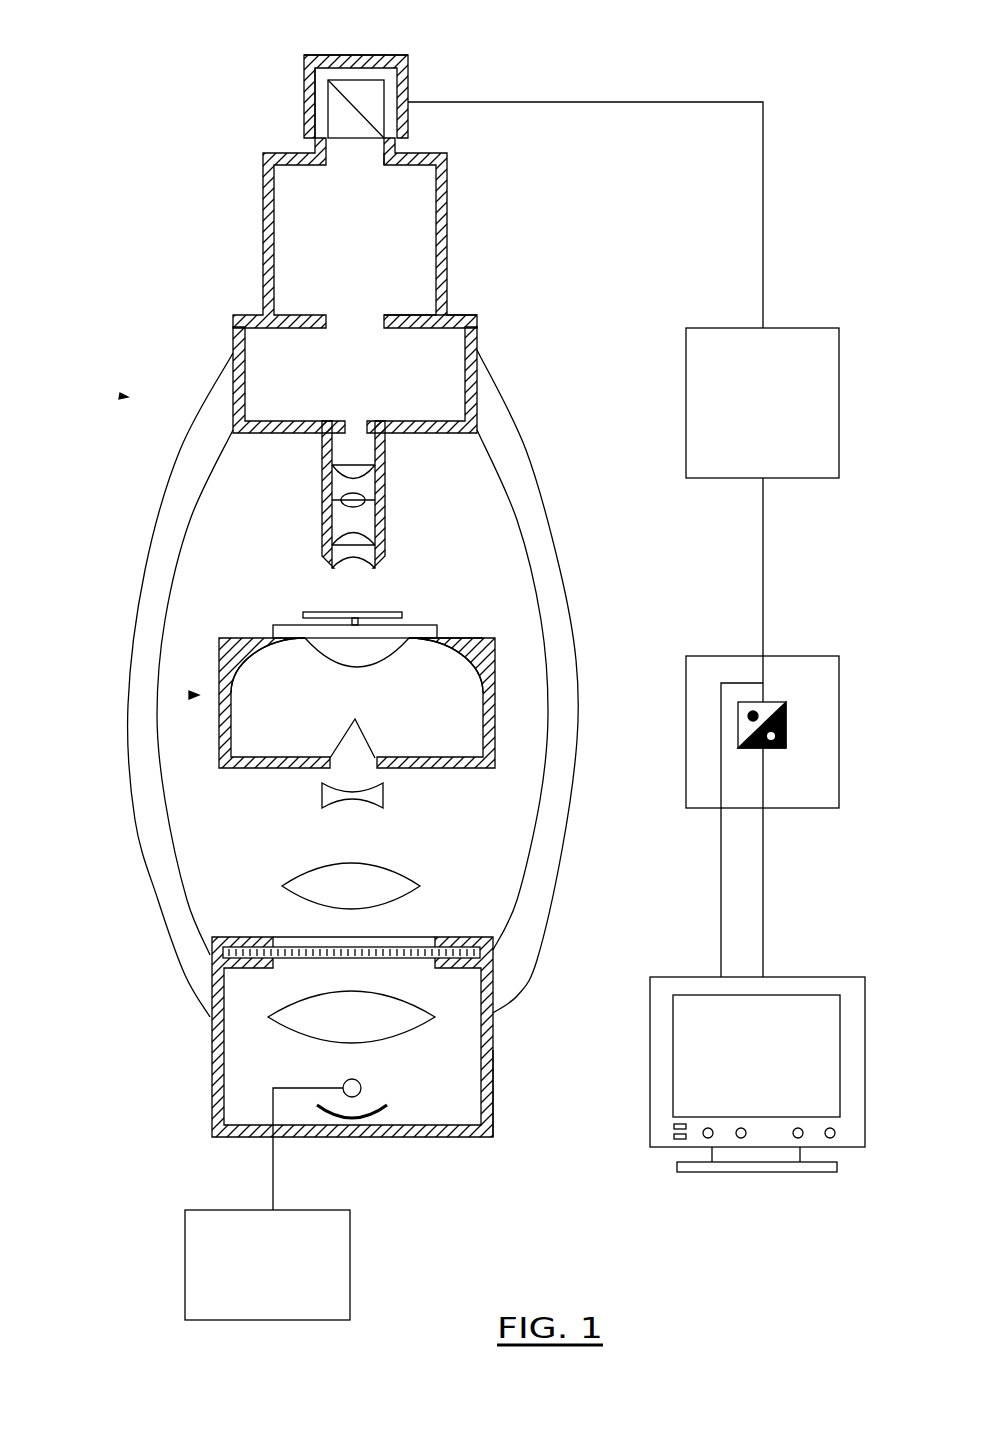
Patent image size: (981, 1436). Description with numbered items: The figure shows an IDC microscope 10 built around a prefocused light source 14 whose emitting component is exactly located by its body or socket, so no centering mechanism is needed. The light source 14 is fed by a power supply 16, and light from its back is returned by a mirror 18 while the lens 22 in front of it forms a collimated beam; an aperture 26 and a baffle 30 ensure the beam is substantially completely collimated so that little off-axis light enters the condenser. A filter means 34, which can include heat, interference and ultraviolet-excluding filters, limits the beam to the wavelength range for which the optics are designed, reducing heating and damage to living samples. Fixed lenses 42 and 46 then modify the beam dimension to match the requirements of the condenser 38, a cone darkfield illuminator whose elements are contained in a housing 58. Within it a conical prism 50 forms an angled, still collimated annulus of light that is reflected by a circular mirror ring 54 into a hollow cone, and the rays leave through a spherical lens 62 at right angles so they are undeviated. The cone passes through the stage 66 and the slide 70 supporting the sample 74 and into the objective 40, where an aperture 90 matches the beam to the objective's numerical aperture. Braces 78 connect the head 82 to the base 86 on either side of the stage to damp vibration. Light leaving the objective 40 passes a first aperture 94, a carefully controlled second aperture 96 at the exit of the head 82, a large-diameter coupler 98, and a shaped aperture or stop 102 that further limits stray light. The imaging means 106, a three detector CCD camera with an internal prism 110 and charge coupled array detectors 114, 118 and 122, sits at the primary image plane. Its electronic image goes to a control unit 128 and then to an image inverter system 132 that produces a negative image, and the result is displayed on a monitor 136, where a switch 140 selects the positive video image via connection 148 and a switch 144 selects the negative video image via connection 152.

The microscope 10 is at (120, 393).
The light source 14 is at (363, 1087).
The power supply 16 is at (350, 1262).
The mirror 18 is at (327, 1113).
The lens 22 is at (430, 1017).
The aperture 26 is at (228, 965).
The baffle 30 is at (240, 960).
The filter means 34 is at (407, 947).
The condenser 38 is at (190, 695).
The objective 40 is at (385, 510).
The fixed lens 42 is at (403, 883).
The fixed lens 46 is at (380, 793).
The conical prism 50 is at (347, 738).
The circular mirror ring 54 is at (253, 652).
The housing 58 is at (487, 760).
The spherical lens 62 is at (383, 648).
The stage 66 is at (463, 640).
The slide 70 is at (288, 623).
The sample 74 is at (365, 613).
The braces 78 is at (153, 568).
The head 82 is at (233, 343).
The base 86 is at (493, 1105).
The aperture 90 is at (337, 493).
The first aperture 94 is at (373, 428).
The second aperture 96 is at (400, 318).
The coupler 98 is at (447, 237).
The aperture or stop 102 is at (393, 165).
The imaging means 106 is at (304, 125).
The internal prism 110 is at (333, 112).
The charge coupled array detector 114 is at (313, 80).
The charge coupled array detector 118 is at (373, 58).
The charge coupled array detector 122 is at (397, 125).
The control unit 128 is at (686, 390).
The image inverter system 132 is at (807, 654).
The monitor 136 is at (800, 975).
The switch 140 is at (677, 1125).
The switch 144 is at (677, 1142).
The connection 148 is at (721, 860).
The connection 152 is at (765, 890).